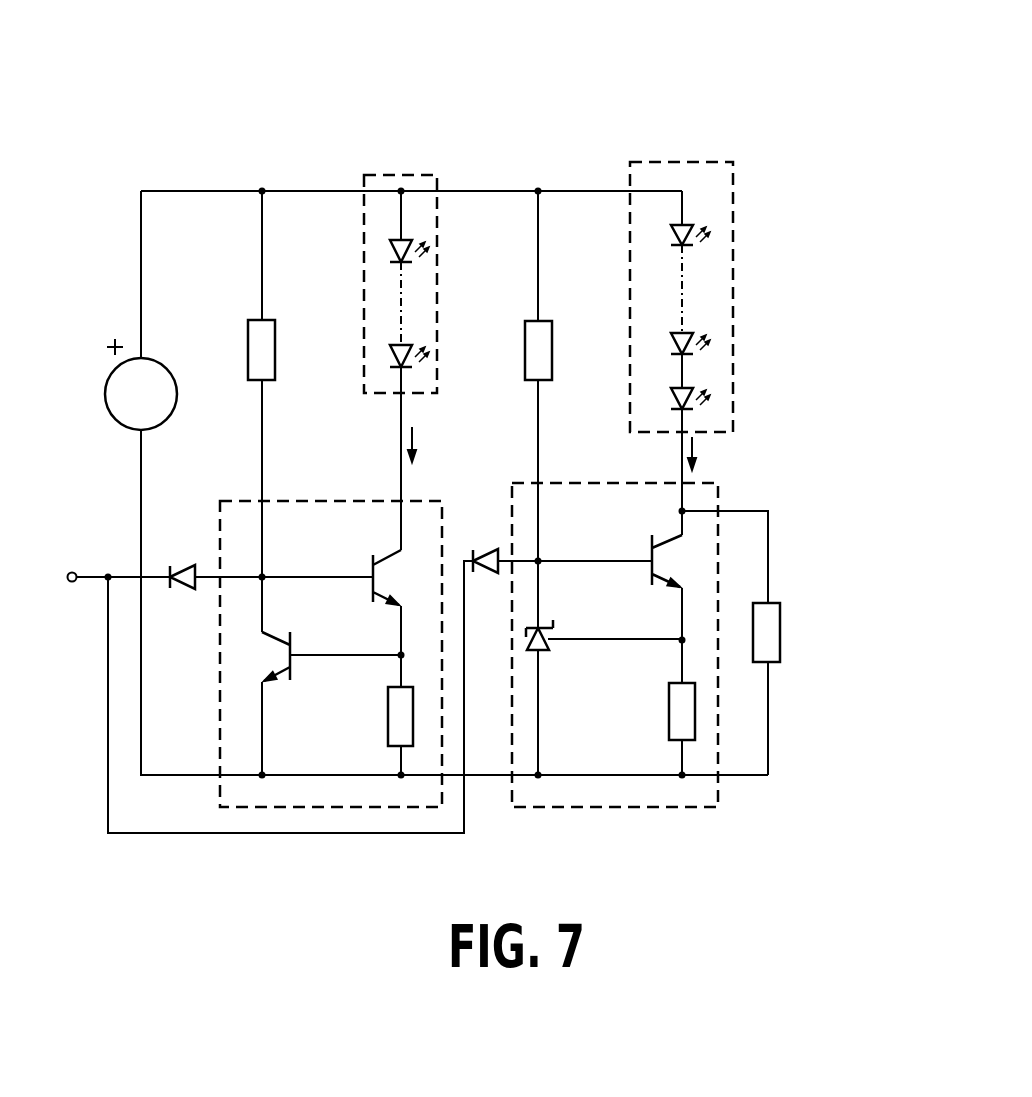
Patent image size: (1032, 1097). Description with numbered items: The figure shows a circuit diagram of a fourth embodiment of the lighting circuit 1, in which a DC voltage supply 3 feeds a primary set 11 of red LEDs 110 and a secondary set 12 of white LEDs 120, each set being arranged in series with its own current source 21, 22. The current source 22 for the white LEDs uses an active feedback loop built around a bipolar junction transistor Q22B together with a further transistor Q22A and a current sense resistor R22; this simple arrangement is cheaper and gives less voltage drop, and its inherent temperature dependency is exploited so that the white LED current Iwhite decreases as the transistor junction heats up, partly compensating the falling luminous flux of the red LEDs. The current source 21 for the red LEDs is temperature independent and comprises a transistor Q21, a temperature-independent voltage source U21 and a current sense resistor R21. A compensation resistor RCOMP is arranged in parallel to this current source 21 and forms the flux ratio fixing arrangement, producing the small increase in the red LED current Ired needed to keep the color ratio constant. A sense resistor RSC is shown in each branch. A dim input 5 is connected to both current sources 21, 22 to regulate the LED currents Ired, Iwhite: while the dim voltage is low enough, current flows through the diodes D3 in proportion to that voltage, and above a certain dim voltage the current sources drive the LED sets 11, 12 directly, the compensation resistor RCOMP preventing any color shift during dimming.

The lighting circuit 1 is at (759, 115).
The DC voltage supply 3 is at (113, 420).
The dim input 5 is at (72, 582).
The primary set of red LEDs 11 is at (733, 300).
The red LEDs 110 is at (680, 230).
The secondary set of white LEDs 12 is at (400, 175).
The white LEDs 120 is at (392, 243).
The current source 21 is at (624, 808).
The current source 22 is at (380, 808).
The diodes D3 is at (185, 572).
The resistor RSC is at (525, 355).
The transistor Q22A is at (401, 556).
The transistor Q22B is at (272, 628).
The current sense resistor R22 is at (388, 717).
The transistor Q21 is at (680, 537).
The temperature-independent voltage source U21 is at (546, 648).
The current sense resistor R21 is at (669, 712).
The compensation resistor RCOMP is at (780, 630).
The white LED current Iwhite is at (445, 446).
The red LED current Ired is at (715, 455).